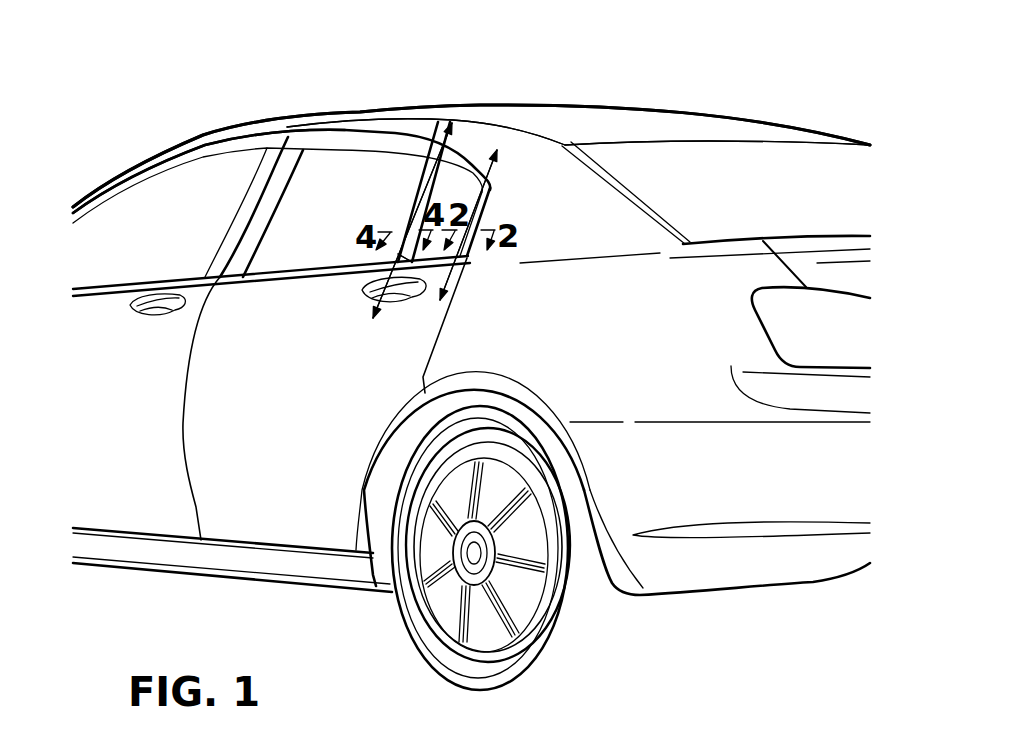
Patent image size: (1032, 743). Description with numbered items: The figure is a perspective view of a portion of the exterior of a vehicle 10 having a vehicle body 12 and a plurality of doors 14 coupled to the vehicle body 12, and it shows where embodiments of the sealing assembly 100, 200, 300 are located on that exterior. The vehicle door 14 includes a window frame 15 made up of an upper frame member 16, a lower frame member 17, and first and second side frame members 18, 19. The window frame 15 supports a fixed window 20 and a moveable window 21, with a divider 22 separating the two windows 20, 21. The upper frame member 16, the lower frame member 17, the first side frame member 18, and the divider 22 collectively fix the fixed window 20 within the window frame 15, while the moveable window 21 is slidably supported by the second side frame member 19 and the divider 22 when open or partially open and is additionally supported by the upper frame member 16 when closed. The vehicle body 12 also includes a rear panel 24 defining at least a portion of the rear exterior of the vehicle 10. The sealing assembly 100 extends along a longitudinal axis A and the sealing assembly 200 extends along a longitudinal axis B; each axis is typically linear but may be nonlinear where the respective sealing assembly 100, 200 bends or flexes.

The vehicle 10 is at (643, 90).
The vehicle body 12 is at (745, 128).
The doors 14 is at (120, 520).
The window frame 15 is at (396, 124).
The upper frame member 16 is at (357, 143).
The lower frame member 17 is at (253, 277).
The first side frame member 18 is at (478, 211).
The second side frame member 19 is at (262, 203).
The fixed window 20 is at (468, 197).
The moveable window 21 is at (315, 158).
The divider 22 is at (418, 194).
The rear panel 24 is at (577, 235).
The sealing assembly 100 is at (466, 256).
The sealing assembly 200 is at (396, 254).
The sealing assembly 300 is at (396, 254).
The longitudinal axis A is at (446, 278).
The longitudinal axis B is at (476, 140).